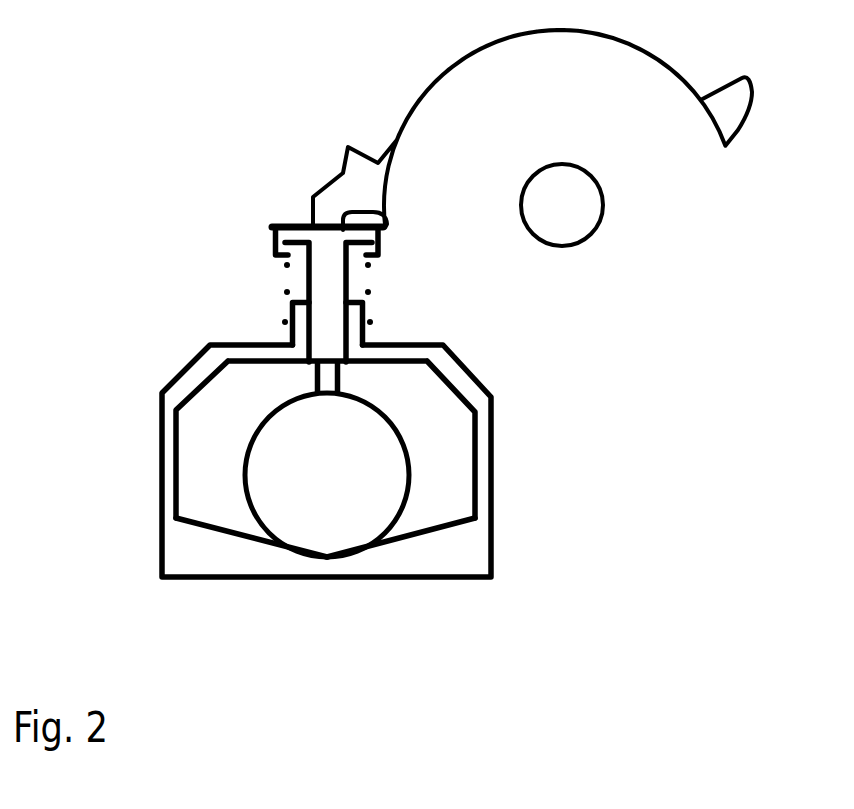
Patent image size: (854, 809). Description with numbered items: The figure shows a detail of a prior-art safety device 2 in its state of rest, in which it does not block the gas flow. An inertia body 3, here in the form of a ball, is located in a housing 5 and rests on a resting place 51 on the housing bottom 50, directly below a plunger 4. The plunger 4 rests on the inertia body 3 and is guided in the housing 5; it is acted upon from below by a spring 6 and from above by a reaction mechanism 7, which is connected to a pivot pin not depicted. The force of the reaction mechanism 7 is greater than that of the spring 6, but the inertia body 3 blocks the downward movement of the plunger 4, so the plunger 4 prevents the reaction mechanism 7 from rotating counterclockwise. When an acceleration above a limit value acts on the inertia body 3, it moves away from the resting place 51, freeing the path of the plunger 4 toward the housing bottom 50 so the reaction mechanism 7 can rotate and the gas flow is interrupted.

The safety device 2 is at (148, 288).
The inertia body 3 is at (330, 491).
The plunger 4 is at (293, 222).
The housing 5 is at (493, 546).
The spring 6 is at (287, 292).
The reaction mechanism 7 is at (688, 234).
The housing bottom 50 is at (436, 504).
The resting place 51 is at (272, 563).